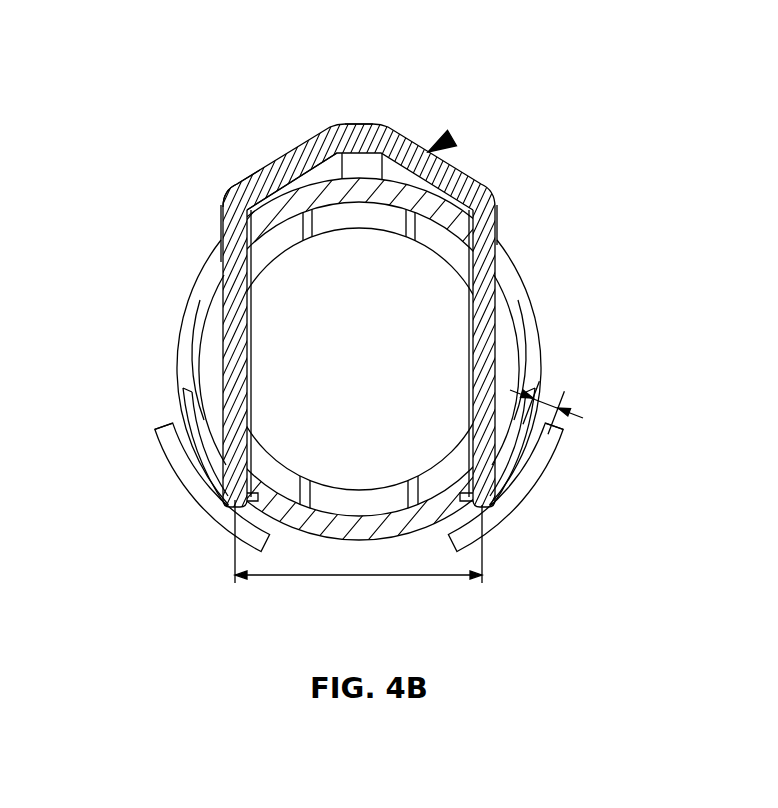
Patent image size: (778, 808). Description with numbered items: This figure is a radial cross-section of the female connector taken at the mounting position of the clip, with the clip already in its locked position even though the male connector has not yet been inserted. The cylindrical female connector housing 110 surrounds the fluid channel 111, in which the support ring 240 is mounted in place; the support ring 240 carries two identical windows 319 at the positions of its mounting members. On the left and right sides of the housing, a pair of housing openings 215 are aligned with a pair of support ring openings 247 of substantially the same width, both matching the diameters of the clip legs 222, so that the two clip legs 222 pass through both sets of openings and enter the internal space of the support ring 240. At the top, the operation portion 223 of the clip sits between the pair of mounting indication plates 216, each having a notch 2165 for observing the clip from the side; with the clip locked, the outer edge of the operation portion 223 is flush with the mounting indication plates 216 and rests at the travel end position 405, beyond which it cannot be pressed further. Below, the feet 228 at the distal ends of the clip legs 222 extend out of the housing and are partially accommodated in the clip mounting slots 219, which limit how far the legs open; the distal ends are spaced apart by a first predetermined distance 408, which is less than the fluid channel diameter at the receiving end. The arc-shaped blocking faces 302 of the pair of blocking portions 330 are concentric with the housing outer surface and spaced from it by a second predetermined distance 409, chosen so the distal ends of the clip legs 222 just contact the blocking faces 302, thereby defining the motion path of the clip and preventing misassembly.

The female connector housing 110 is at (445, 207).
The fluid channel 111 is at (265, 283).
The housing opening 215 is at (203, 300).
The mounting indication plate 216 is at (388, 128).
The notch 2165 is at (375, 126).
The clip mounting slot 219 is at (183, 408).
The clip leg 222 is at (247, 377).
The operation portion 223 is at (228, 188).
The foot 228 is at (230, 506).
The support ring 240 is at (458, 252).
The support ring opening 247 is at (220, 347).
The blocking face 302 is at (180, 428).
The window 319 is at (283, 167).
The blocking portion 330 is at (182, 468).
The travel end position 405 is at (452, 138).
The first predetermined distance 408 is at (358, 556).
The second predetermined distance 409 is at (566, 410).